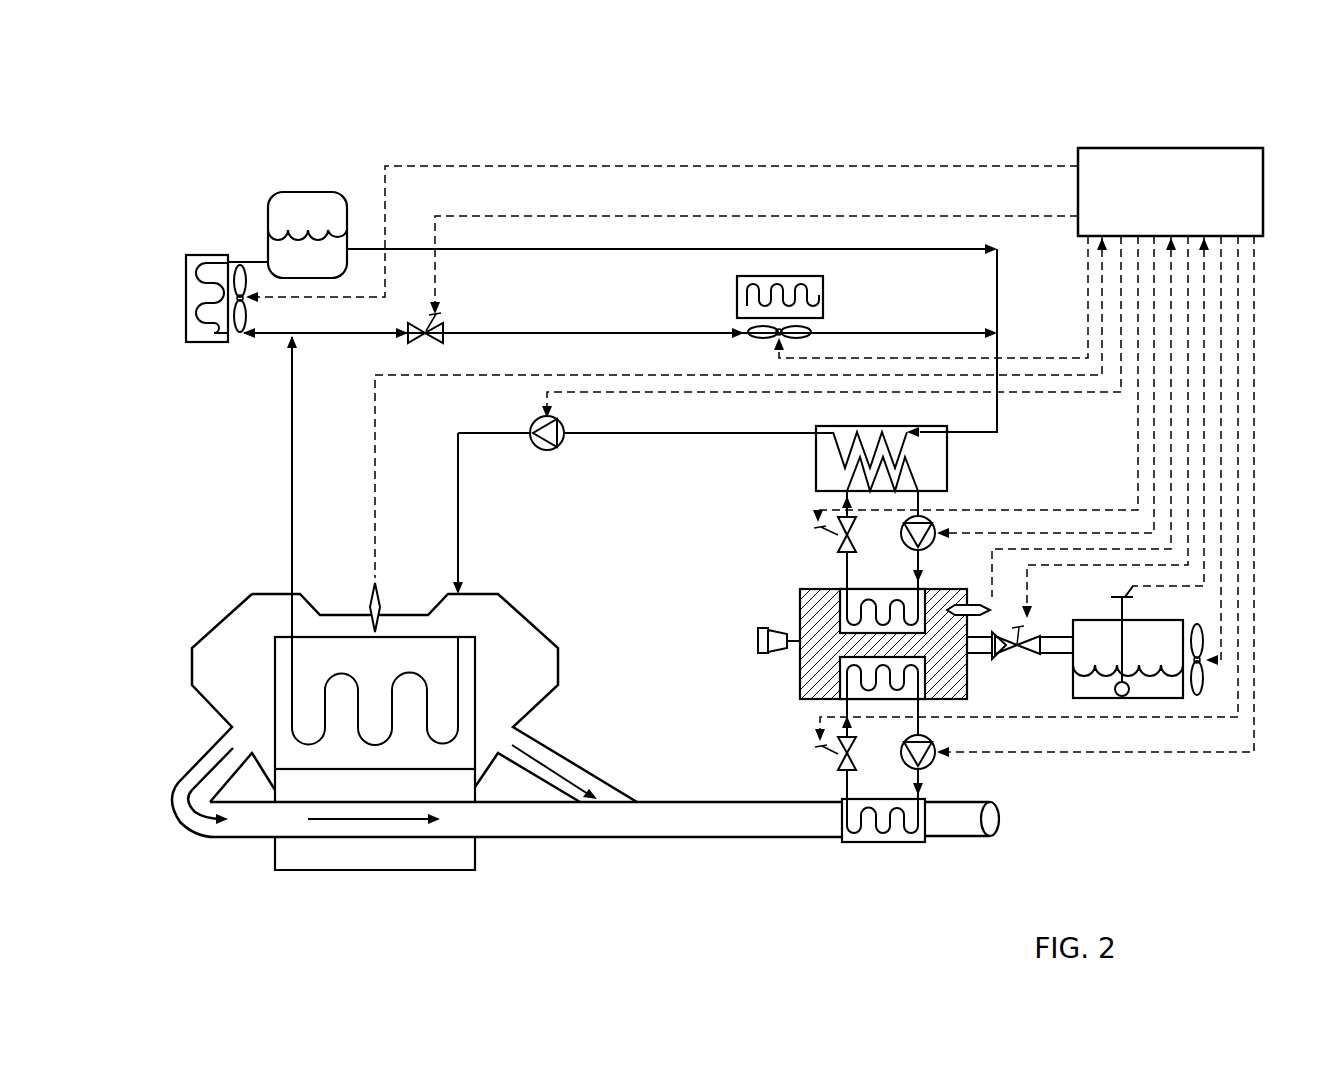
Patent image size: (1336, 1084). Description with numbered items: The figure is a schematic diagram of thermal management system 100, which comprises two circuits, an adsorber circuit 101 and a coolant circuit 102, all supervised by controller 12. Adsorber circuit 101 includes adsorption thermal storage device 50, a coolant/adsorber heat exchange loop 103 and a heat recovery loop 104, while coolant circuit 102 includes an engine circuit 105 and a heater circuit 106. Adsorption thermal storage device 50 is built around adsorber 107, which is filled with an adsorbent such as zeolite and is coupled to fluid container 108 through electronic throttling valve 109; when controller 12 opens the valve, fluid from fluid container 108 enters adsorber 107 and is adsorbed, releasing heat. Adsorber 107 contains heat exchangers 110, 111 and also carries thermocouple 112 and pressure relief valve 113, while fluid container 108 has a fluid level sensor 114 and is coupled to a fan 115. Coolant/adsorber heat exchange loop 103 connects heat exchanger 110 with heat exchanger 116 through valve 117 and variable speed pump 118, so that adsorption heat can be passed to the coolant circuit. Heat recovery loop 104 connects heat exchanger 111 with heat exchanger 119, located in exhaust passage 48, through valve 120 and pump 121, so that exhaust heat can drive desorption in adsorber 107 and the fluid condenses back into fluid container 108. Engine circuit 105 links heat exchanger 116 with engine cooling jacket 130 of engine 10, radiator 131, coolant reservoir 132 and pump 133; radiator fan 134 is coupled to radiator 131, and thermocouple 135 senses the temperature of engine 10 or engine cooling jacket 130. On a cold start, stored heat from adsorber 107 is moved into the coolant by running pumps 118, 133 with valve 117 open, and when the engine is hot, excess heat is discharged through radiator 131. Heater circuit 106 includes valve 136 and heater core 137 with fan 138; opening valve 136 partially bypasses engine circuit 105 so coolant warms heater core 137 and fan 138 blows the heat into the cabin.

The thermal management system 100 is at (902, 88).
The coolant circuit 102 is at (510, 138).
The engine circuit 105 is at (243, 440).
The heater circuit 106 is at (540, 318).
The adsorption thermal storage device 50 is at (780, 508).
The coolant/adsorber heat exchange loop 103 is at (748, 535).
The adsorber circuit 101 is at (1088, 838).
The heat recovery loop 104 is at (808, 858).
The controller 12 is at (1218, 230).
The engine 10 is at (503, 677).
The exhaust passage 48 is at (655, 830).
The engine cooling jacket 130 is at (357, 675).
The radiator 131 is at (186, 325).
The coolant reservoir 132 is at (286, 272).
The pump 133 is at (555, 450).
The radiator fan 134 is at (246, 320).
The thermocouple 135 is at (367, 607).
The valve 136 is at (440, 323).
The heater core 137 is at (740, 277).
The fan 138 is at (760, 338).
The adsorber 107 is at (800, 680).
The fluid container 108 is at (1073, 690).
The electronic throttling valve 109 is at (1030, 630).
The heat exchanger 110 is at (884, 589).
The heat exchanger 111 is at (884, 699).
The thermocouple 112 is at (987, 606).
The pressure relief valve 113 is at (758, 640).
The fluid level sensor 114 is at (1128, 698).
The fan 115 is at (1205, 698).
The heat exchanger 116 is at (950, 453).
The valve 117 is at (835, 540).
The pump 118 is at (933, 525).
The heat exchanger 119 is at (885, 842).
The valve 120 is at (835, 760).
The pump 121 is at (935, 765).